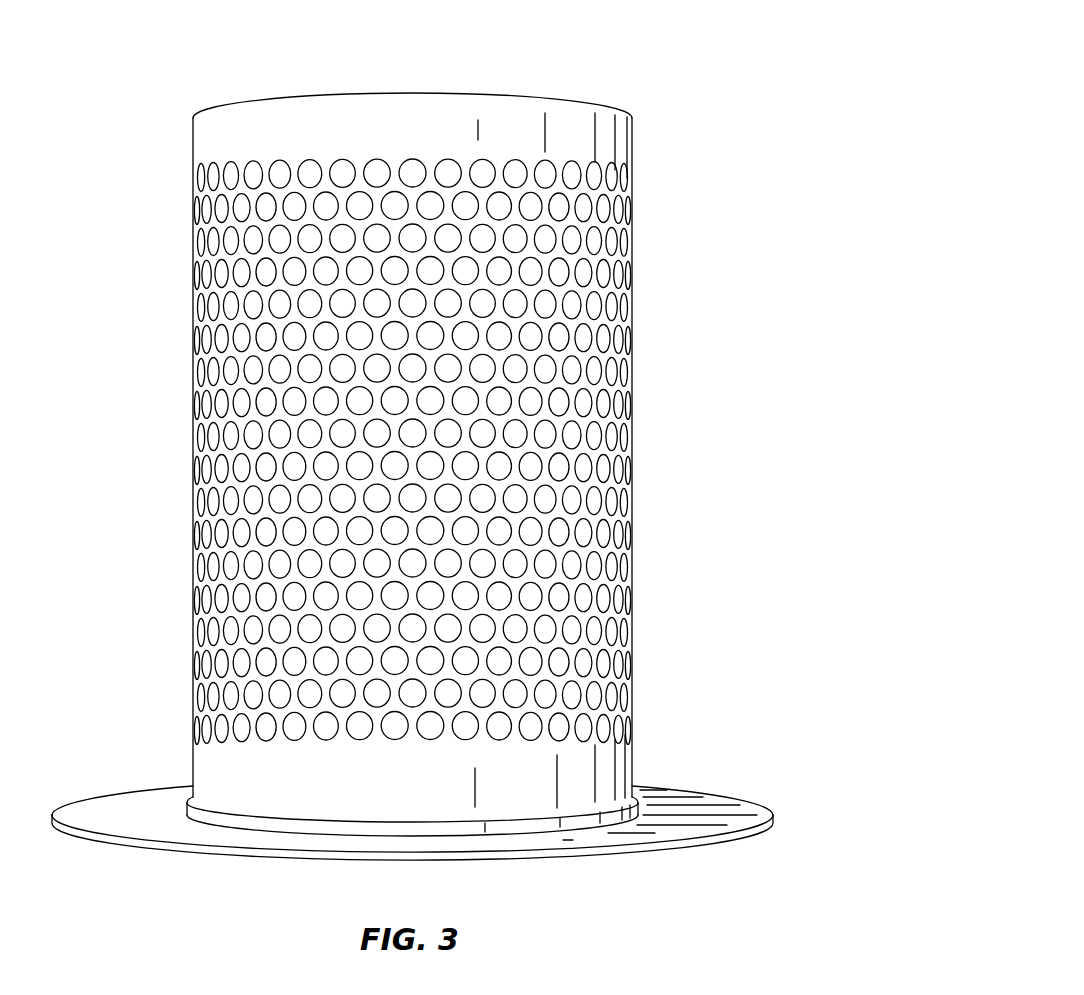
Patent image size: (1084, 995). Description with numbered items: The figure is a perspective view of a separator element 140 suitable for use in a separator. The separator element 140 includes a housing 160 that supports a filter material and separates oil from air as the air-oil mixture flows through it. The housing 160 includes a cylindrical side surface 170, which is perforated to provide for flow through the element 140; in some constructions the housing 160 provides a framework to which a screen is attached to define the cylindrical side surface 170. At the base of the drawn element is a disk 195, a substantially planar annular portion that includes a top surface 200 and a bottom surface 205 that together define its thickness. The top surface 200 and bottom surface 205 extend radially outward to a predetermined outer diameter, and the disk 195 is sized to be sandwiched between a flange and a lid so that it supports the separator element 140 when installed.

The separator element 140 is at (650, 75).
The cylindrical side surface 170 is at (623, 148).
The housing 160 is at (640, 763).
The top surface 200 is at (667, 852).
The disk 195 is at (772, 828).
The bottom surface 205 is at (732, 810).